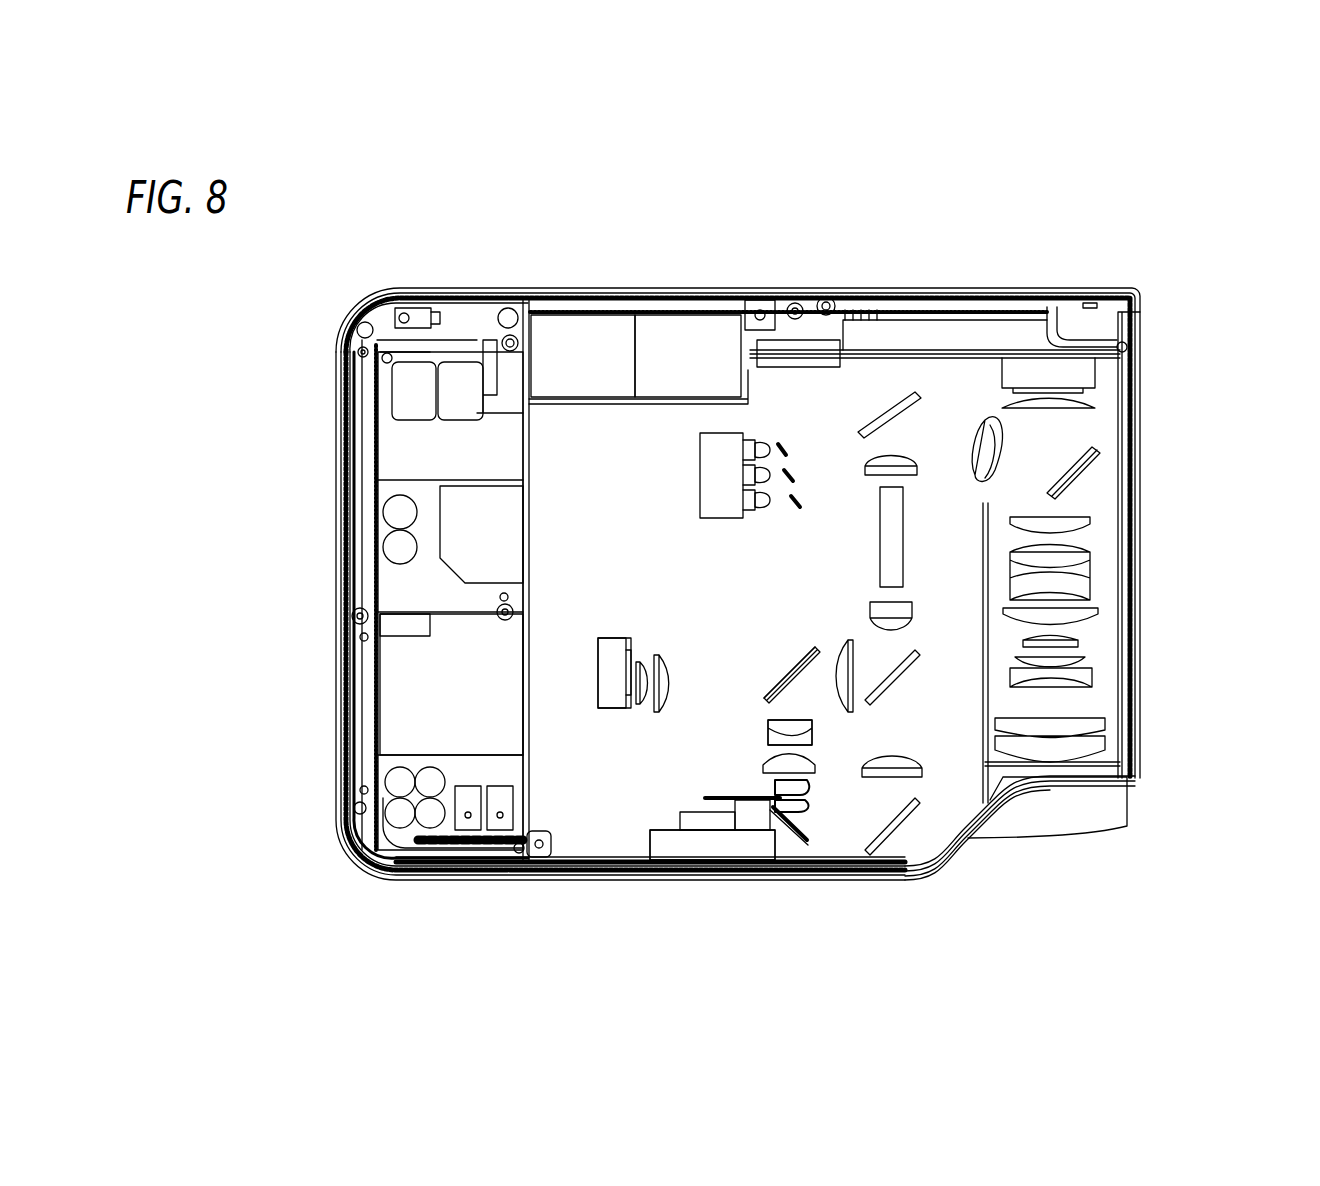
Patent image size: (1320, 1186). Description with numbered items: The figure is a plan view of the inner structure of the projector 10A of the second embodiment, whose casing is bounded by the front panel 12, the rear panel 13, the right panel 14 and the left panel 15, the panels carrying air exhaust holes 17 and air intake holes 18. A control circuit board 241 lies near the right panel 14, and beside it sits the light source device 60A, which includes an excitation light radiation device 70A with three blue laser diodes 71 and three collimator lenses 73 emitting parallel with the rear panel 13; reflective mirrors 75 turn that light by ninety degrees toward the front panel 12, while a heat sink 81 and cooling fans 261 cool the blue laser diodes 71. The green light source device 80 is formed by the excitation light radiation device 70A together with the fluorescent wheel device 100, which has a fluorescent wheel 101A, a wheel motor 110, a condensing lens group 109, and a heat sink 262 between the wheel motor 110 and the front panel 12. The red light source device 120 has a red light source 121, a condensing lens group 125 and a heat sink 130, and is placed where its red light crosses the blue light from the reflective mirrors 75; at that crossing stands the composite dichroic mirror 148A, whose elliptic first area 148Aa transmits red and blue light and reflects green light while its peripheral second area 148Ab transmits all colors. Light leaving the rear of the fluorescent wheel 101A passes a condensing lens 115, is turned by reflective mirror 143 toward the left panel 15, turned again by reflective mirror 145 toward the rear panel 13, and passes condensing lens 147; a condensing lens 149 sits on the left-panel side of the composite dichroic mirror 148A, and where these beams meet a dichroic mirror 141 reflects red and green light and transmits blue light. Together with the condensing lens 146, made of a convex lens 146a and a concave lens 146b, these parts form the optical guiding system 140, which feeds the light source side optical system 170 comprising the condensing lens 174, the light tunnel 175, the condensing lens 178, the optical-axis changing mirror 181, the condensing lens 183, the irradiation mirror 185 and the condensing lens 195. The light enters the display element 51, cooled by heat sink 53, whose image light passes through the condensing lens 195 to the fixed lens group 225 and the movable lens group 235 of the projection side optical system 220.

The projector 10A is at (1150, 280).
The front panel 12 is at (427, 862).
The rear panel 13 is at (625, 304).
The right panel 14 is at (352, 468).
The left panel 15 is at (1142, 723).
The air exhaust holes 17 is at (340, 498).
The air intake holes 18 is at (1138, 312).
The display element 51 is at (1082, 392).
The heat sink 53 is at (1020, 330).
The light source device 60A is at (605, 550).
The excitation light radiation device 70A is at (662, 472).
The green light source device 80 is at (739, 896).
The blue laser diode 71 is at (752, 512).
The collimator lens 73 is at (763, 512).
The reflective mirror 75 is at (790, 445).
The heat sink 81 is at (726, 505).
The fluorescent wheel device 100 is at (790, 842).
The fluorescent wheel 101A is at (730, 796).
The condensing lens group 109 is at (757, 768).
The wheel motor 110 is at (752, 822).
The condensing lens 115 is at (880, 842).
The red light source device 120 is at (616, 714).
The red light source 121 is at (632, 640).
The condensing lens group 125 is at (646, 714).
The heat sink 130 is at (612, 650).
The optical guiding system 140 is at (930, 796).
The dichroic mirror 141 is at (910, 663).
The reflective mirror 143 is at (795, 815).
The reflective mirror 145 is at (905, 858).
The condensing lens 146 is at (778, 728).
The convex lens 146a is at (800, 745).
The concave lens 146b is at (815, 732).
The condensing lens 147 is at (905, 760).
The composite dichroic mirror 148A is at (810, 648).
The first area 148Aa is at (790, 676).
The second area 148Ab is at (770, 703).
The condensing lens 149 is at (849, 648).
The light source side optical system 170 is at (933, 388).
The condensing lens 174 is at (903, 617).
The light tunnel 175 is at (895, 553).
The condensing lens 178 is at (902, 456).
The optical-axis changing mirror 181 is at (886, 395).
The condensing lens 183 is at (1002, 440).
The irradiation mirror 185 is at (1090, 466).
The condensing lens 195 is at (1088, 406).
The projection side optical system 220 is at (1095, 589).
The fixed lens group 225 is at (1082, 748).
The movable lens group 235 is at (1095, 542).
The control circuit board 241 is at (435, 645).
The cooling fan 261 is at (548, 392).
The heat sink 262 is at (707, 822).